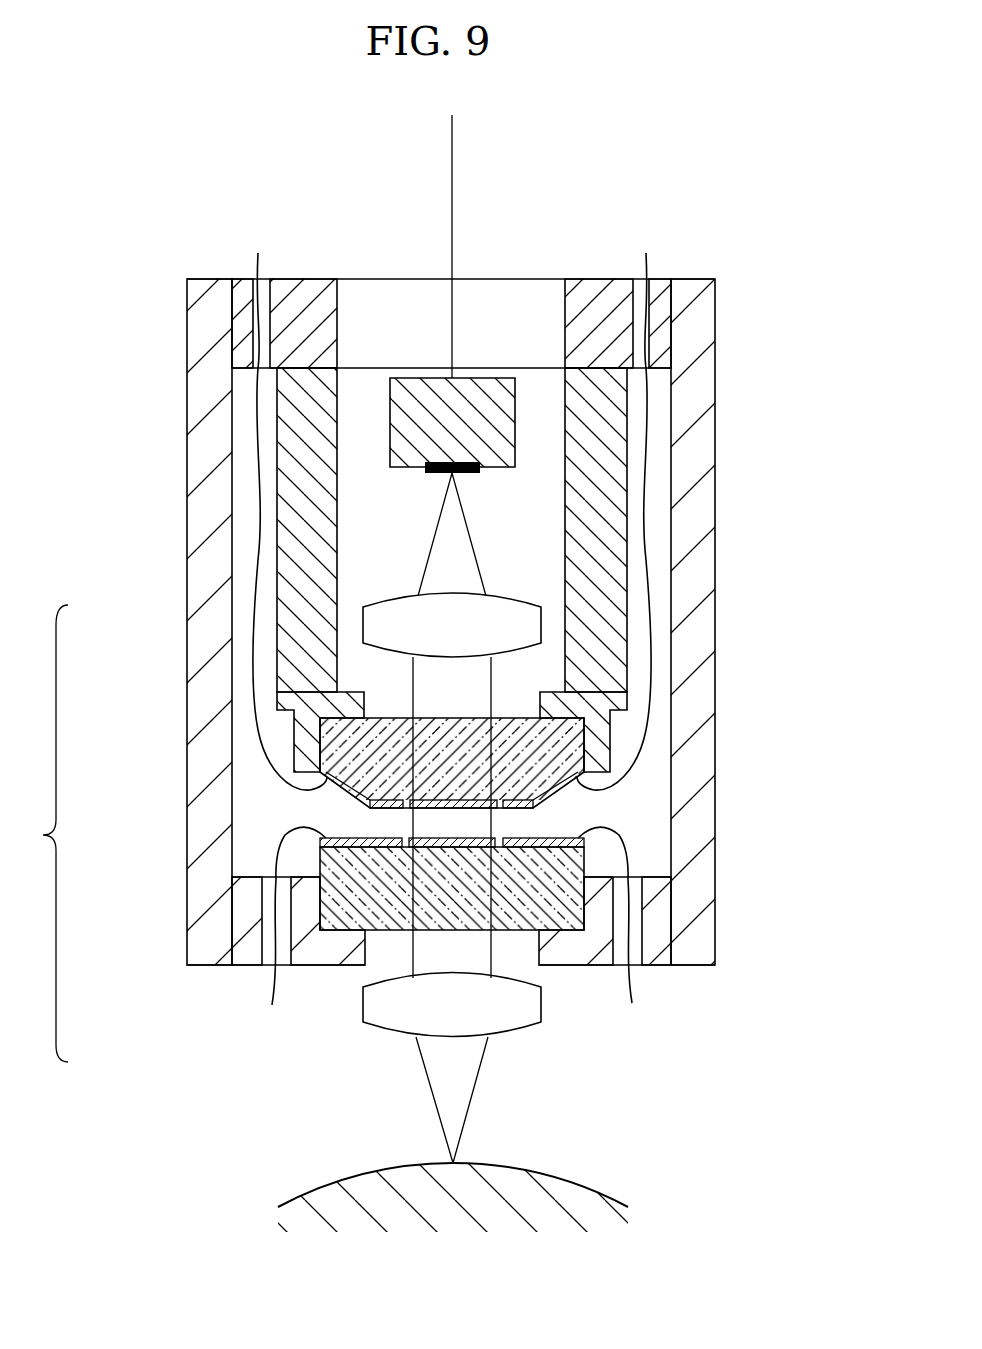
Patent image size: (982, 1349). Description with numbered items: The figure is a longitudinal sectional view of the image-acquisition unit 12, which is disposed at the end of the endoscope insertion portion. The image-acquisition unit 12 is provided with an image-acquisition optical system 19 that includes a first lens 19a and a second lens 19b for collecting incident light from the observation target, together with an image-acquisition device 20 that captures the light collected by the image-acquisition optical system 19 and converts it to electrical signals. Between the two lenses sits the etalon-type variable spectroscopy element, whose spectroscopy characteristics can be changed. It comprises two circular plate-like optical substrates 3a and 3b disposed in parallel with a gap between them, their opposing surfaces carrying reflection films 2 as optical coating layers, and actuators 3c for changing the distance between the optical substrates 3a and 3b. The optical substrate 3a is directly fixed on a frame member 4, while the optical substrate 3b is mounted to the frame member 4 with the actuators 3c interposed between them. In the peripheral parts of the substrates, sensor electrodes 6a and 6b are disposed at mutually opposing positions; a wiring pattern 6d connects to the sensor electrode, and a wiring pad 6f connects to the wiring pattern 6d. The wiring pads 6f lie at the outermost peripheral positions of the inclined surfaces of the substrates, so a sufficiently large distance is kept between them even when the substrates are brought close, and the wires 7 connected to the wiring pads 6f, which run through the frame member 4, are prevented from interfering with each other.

The reflection film 2 is at (440, 802).
The optical substrate 3a is at (338, 917).
The optical substrate 3b is at (345, 745).
The actuator 3c is at (340, 490).
The frame member 4 is at (605, 290).
The sensor electrode 6a is at (520, 850).
The sensor electrode 6b is at (395, 797).
The wiring pattern 6d is at (590, 798).
The wiring pad 6f is at (555, 786).
The wire 7 is at (258, 553).
The image-acquisition unit 12 is at (765, 445).
The image-acquisition optical system 19 is at (37, 833).
The first lens 19a is at (365, 1003).
The second lens 19b is at (375, 627).
The image-acquisition device 20 is at (485, 378).